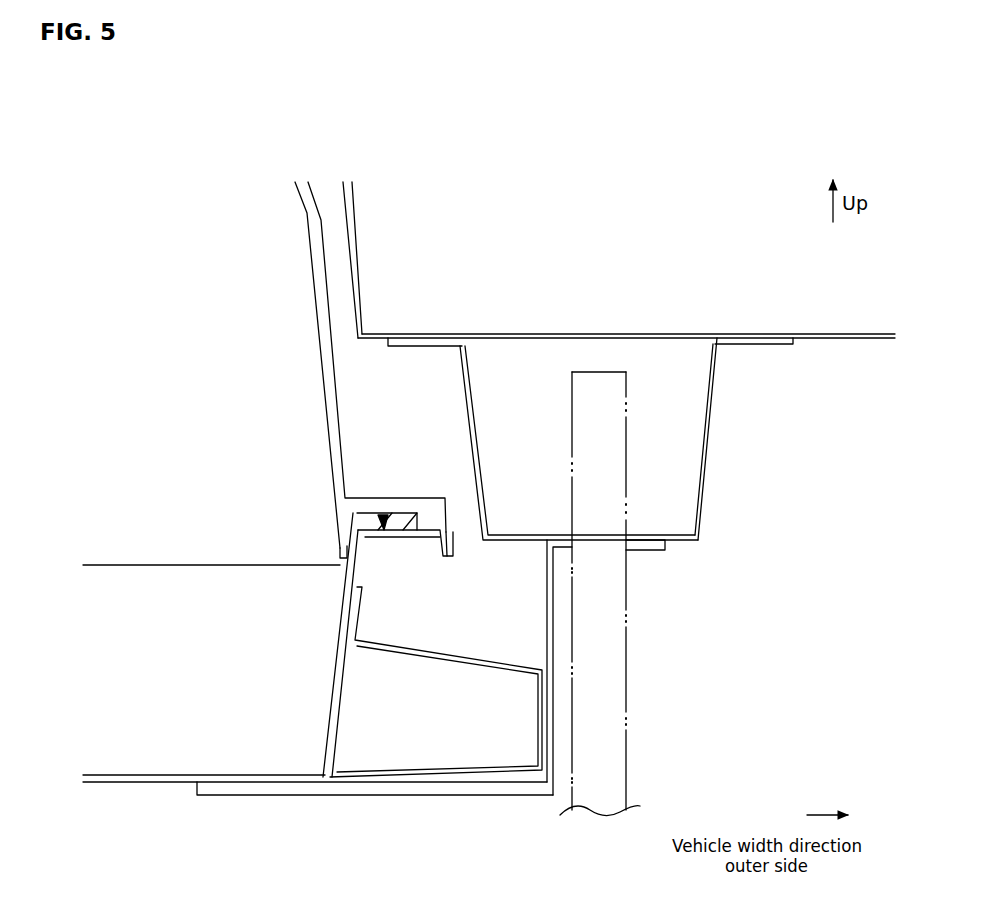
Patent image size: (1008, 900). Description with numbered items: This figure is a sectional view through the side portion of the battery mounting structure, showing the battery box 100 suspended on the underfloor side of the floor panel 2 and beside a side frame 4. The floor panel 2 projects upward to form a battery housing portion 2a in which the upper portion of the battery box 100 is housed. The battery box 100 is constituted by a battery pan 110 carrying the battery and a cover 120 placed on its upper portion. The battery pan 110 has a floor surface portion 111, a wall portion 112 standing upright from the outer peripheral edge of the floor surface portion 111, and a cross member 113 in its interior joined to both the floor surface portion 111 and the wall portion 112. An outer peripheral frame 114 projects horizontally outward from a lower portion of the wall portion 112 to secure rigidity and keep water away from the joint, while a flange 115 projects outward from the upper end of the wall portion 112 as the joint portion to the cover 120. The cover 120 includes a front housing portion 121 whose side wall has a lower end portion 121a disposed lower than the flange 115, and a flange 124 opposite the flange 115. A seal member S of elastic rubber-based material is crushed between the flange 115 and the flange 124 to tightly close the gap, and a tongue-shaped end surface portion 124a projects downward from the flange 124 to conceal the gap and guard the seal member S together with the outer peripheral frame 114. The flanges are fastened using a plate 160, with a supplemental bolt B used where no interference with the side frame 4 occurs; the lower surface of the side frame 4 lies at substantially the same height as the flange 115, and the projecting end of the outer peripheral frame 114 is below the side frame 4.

The battery box 100 is at (150, 266).
The cover 120 is at (222, 394).
The battery pan 110 is at (146, 541).
The front housing portion 121 is at (317, 290).
The lower end portion 121a is at (340, 550).
The battery housing portion 2a is at (354, 222).
The floor panel 2 is at (817, 336).
The flange 124 is at (403, 498).
The end surface portion 124a is at (448, 538).
The side frame 4 is at (710, 417).
The seal member S is at (382, 520).
The cross member 113 is at (190, 565).
The wall portion 112 is at (337, 688).
The flange 115 is at (413, 537).
The outer peripheral frame 114 is at (497, 662).
The floor surface portion 111 is at (146, 780).
The plate 160 is at (553, 610).
The supplemental bolt B is at (626, 681).